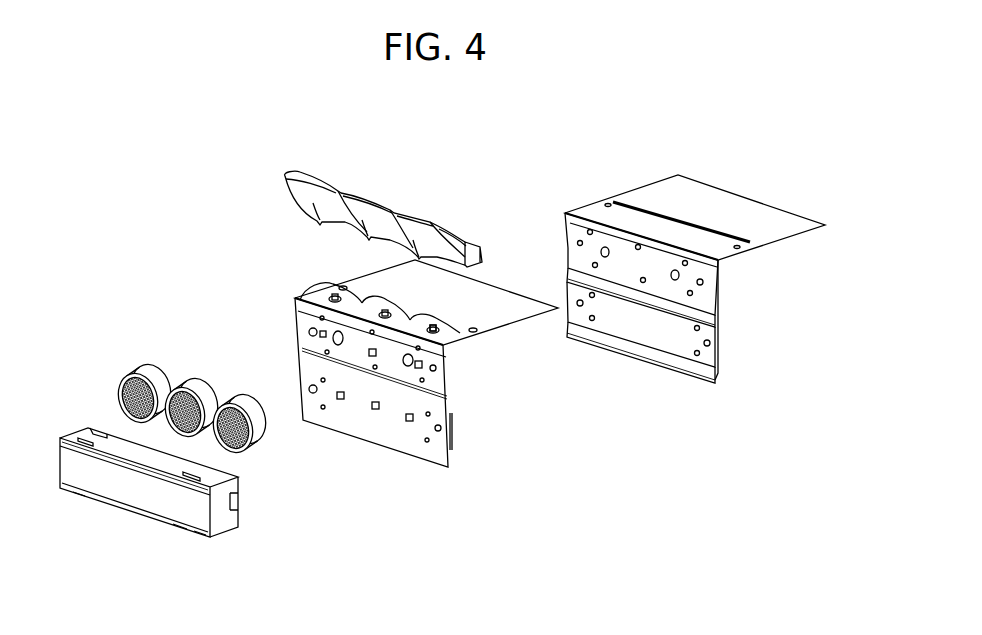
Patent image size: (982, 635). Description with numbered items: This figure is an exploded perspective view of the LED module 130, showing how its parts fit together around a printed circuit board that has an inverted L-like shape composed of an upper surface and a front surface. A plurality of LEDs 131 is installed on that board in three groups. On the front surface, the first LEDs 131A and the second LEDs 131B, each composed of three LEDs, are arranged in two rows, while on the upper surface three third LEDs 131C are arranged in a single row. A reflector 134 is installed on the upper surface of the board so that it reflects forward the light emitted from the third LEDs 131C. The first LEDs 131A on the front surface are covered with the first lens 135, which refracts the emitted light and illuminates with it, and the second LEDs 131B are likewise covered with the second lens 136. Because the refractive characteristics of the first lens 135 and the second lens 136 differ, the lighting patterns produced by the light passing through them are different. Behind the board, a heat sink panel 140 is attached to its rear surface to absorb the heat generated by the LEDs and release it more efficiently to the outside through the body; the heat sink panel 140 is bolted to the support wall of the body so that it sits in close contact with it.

The LED module 130 is at (111, 205).
The LEDs 131 is at (421, 414).
The first LEDs 131A is at (340, 399).
The second LEDs 131B is at (372, 356).
The third LEDs 131C is at (433, 332).
The reflector 134 is at (322, 203).
The first lens 135 is at (128, 493).
The second lens 136 is at (122, 403).
The heat sink panel 140 is at (648, 318).